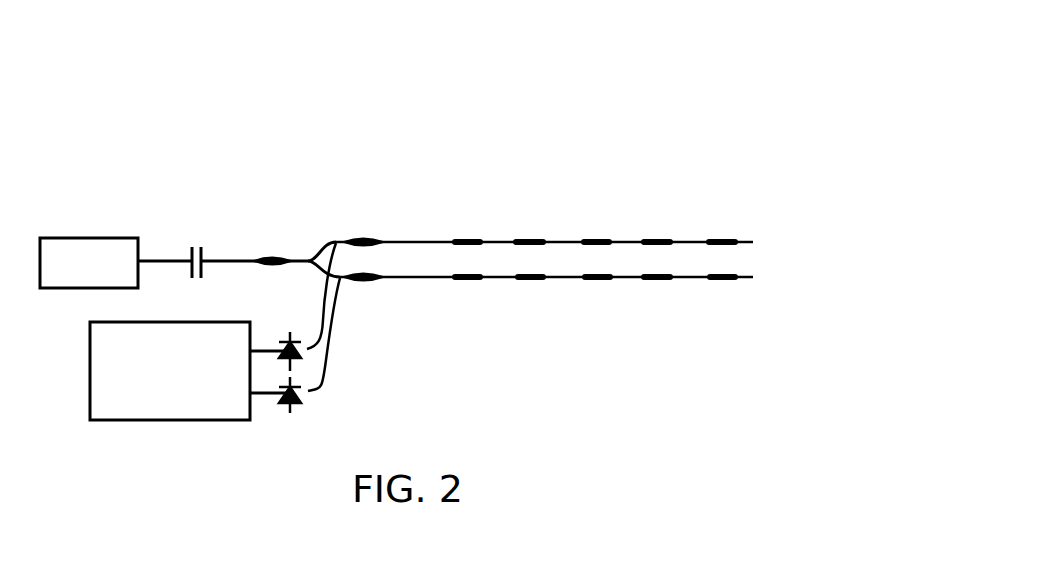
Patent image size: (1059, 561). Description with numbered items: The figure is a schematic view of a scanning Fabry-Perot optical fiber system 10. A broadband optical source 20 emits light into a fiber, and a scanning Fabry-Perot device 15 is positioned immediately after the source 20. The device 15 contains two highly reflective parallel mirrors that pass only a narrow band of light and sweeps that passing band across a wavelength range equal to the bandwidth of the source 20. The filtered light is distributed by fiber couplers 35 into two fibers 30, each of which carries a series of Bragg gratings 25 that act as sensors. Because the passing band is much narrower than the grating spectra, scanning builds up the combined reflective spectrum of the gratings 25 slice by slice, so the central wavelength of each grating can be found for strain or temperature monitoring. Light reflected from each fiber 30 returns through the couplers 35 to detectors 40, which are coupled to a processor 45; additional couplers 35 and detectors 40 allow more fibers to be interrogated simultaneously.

The fiber optic sensing system 10 is at (416, 109).
The scanning Fabry-Perot device 15 is at (185, 255).
The broadband optical source 20 is at (107, 237).
The Bragg gratings 25 is at (523, 240).
The fiber 30 is at (618, 240).
The fiber couplers 35 is at (368, 238).
The detectors 40 is at (298, 398).
The processor 45 is at (163, 420).